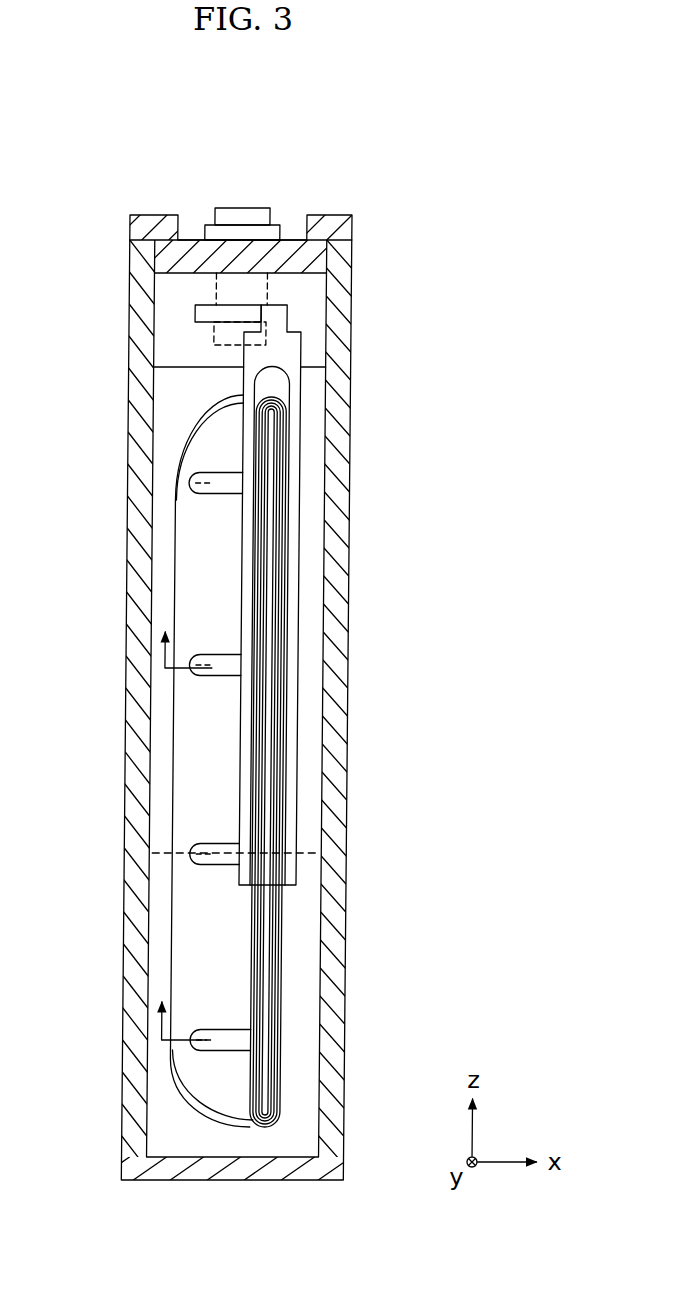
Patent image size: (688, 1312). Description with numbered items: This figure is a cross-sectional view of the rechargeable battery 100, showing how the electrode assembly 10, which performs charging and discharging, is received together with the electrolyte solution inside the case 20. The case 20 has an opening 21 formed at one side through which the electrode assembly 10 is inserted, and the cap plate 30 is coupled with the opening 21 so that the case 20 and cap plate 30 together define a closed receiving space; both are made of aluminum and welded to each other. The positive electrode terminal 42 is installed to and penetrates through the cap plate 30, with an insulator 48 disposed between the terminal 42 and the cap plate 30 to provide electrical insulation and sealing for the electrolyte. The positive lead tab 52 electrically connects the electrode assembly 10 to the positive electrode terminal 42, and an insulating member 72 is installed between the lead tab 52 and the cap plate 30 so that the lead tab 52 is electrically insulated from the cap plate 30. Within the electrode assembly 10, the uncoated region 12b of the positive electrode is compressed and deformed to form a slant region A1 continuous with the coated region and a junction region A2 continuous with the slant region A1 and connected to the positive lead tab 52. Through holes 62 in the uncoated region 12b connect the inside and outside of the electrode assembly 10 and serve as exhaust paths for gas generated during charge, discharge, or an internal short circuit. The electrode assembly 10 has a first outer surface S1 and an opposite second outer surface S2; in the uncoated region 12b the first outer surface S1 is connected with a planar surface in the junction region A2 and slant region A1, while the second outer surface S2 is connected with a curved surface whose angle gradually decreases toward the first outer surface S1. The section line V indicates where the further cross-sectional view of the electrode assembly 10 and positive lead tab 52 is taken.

The rechargeable battery 100 is at (263, 128).
The case 20 is at (349, 413).
The opening 21 is at (162, 243).
The cap plate 30 is at (320, 220).
The positive electrode terminal 42 is at (257, 213).
The insulator 48 is at (232, 233).
The insulating member 72 is at (200, 300).
The positive lead tab 52 is at (297, 477).
The uncoated region 12b is at (420, 690).
The electrode assembly 10 is at (180, 1088).
The through hole 62 is at (234, 670).
The second outer surface S2 is at (182, 963).
The first outer surface S1 is at (294, 990).
The junction region A2 is at (281, 697).
The slant region A1 is at (220, 762).
The line V- V is at (169, 850).